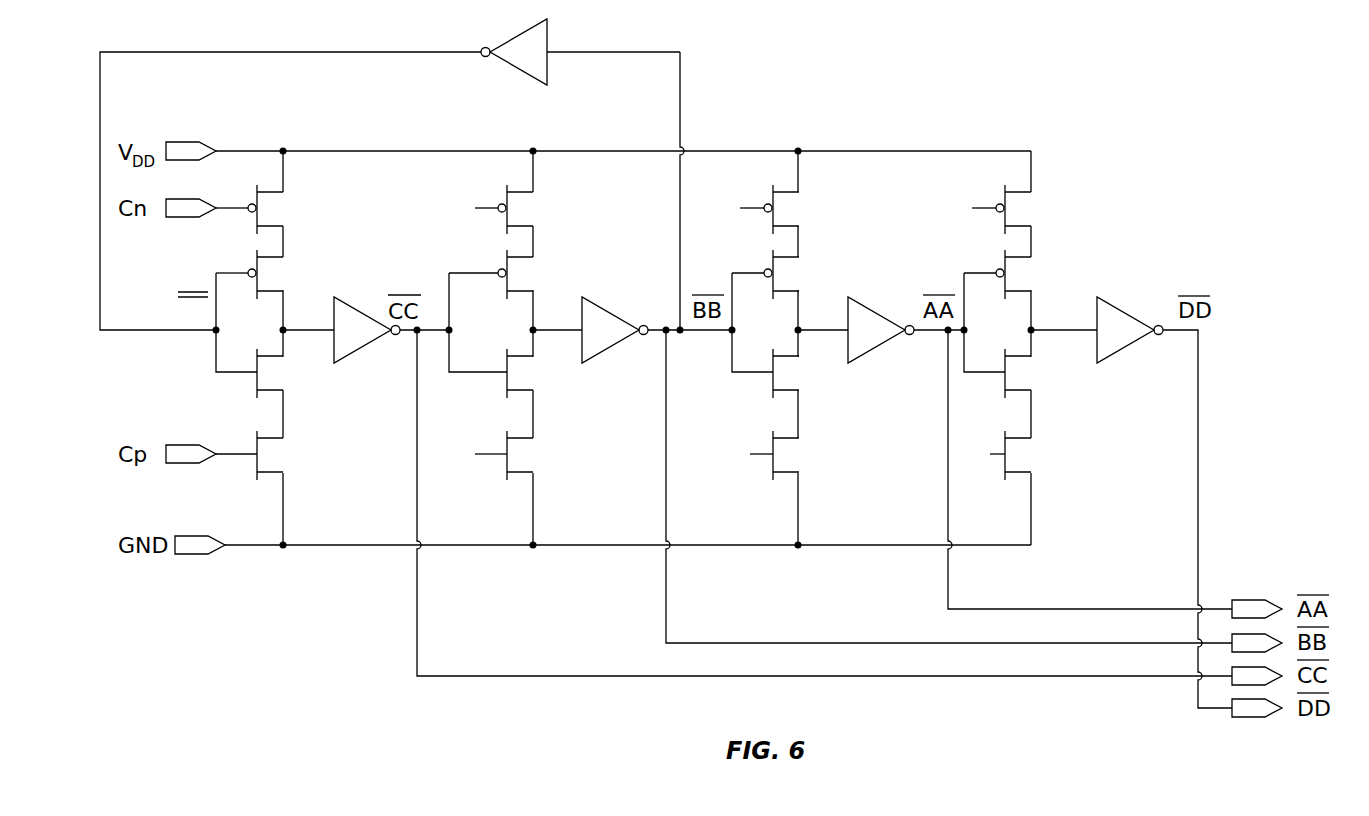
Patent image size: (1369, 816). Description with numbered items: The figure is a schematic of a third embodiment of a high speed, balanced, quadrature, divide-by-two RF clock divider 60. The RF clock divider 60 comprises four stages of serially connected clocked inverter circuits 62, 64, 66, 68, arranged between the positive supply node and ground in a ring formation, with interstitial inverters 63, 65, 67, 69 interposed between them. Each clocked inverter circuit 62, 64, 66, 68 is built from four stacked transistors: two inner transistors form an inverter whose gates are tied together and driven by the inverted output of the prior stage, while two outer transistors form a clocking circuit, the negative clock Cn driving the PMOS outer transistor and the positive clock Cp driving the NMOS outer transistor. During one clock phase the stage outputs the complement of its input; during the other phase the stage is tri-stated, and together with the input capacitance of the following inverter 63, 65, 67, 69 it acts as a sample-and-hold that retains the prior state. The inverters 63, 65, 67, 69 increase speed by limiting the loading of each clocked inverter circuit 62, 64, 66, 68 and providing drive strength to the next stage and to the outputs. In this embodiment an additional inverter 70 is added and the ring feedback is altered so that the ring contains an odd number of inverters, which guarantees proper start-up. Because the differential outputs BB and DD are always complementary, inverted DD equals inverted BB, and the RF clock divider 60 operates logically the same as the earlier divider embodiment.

The RF clock divider 60 is at (1118, 157).
The clocked inverter circuit 62 is at (333, 223).
The inverter 63 is at (365, 340).
The clocked inverter circuit 64 is at (565, 227).
The inverter 65 is at (613, 340).
The clocked inverter circuit 66 is at (823, 212).
The inverter 67 is at (877, 340).
The clocked inverter circuit 68 is at (935, 425).
The inverter 69 is at (1127, 340).
The additional inverter 70 is at (538, 59).